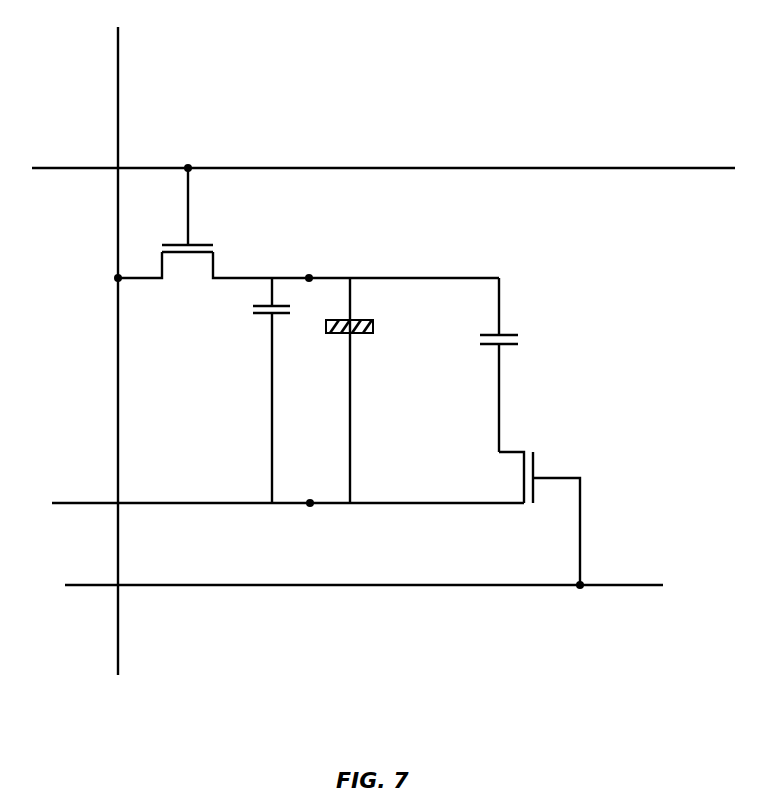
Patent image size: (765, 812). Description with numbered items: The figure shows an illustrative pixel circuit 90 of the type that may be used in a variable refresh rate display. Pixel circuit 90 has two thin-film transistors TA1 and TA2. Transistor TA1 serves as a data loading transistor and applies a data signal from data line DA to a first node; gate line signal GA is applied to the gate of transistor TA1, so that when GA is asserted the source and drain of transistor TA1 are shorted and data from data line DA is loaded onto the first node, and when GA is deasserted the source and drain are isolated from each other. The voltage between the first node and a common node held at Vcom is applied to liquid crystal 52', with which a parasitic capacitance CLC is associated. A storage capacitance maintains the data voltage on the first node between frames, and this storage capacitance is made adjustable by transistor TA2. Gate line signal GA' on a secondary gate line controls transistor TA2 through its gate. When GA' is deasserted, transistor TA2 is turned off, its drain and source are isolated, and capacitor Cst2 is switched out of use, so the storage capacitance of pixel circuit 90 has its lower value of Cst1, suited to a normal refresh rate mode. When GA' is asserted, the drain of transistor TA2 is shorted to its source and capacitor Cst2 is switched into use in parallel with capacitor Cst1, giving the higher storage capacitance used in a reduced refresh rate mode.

The pixel circuit 90 is at (613, 71).
The liquid crystal 52' is at (337, 356).
The data line DA is at (137, 349).
The gate line signal GA is at (383, 157).
The gate line signal on secondary gate line GA' is at (359, 574).
The common voltage Vcom is at (276, 491).
The thin-film transistor TA1 is at (193, 225).
The thin-film transistor TA2 is at (522, 504).
The capacitor Cst1 is at (244, 390).
The capacitor Cst2 is at (525, 365).
The parasitic capacitance CLC is at (359, 390).